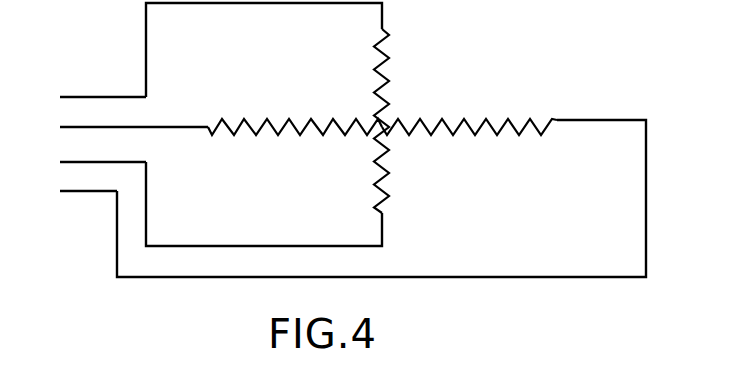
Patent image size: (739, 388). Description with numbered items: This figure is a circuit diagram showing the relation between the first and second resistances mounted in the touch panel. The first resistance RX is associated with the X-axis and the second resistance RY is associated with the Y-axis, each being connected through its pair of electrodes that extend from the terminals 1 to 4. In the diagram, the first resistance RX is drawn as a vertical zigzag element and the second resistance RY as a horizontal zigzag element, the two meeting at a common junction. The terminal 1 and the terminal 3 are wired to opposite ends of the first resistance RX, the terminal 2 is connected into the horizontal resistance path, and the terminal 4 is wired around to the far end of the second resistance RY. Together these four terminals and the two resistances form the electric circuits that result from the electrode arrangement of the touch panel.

The terminal 1 is at (91, 98).
The terminal 2 is at (122, 129).
The terminal 3 is at (91, 164).
The terminal 4 is at (76, 192).
The first resistance RX is at (388, 72).
The second resistance RY is at (487, 118).